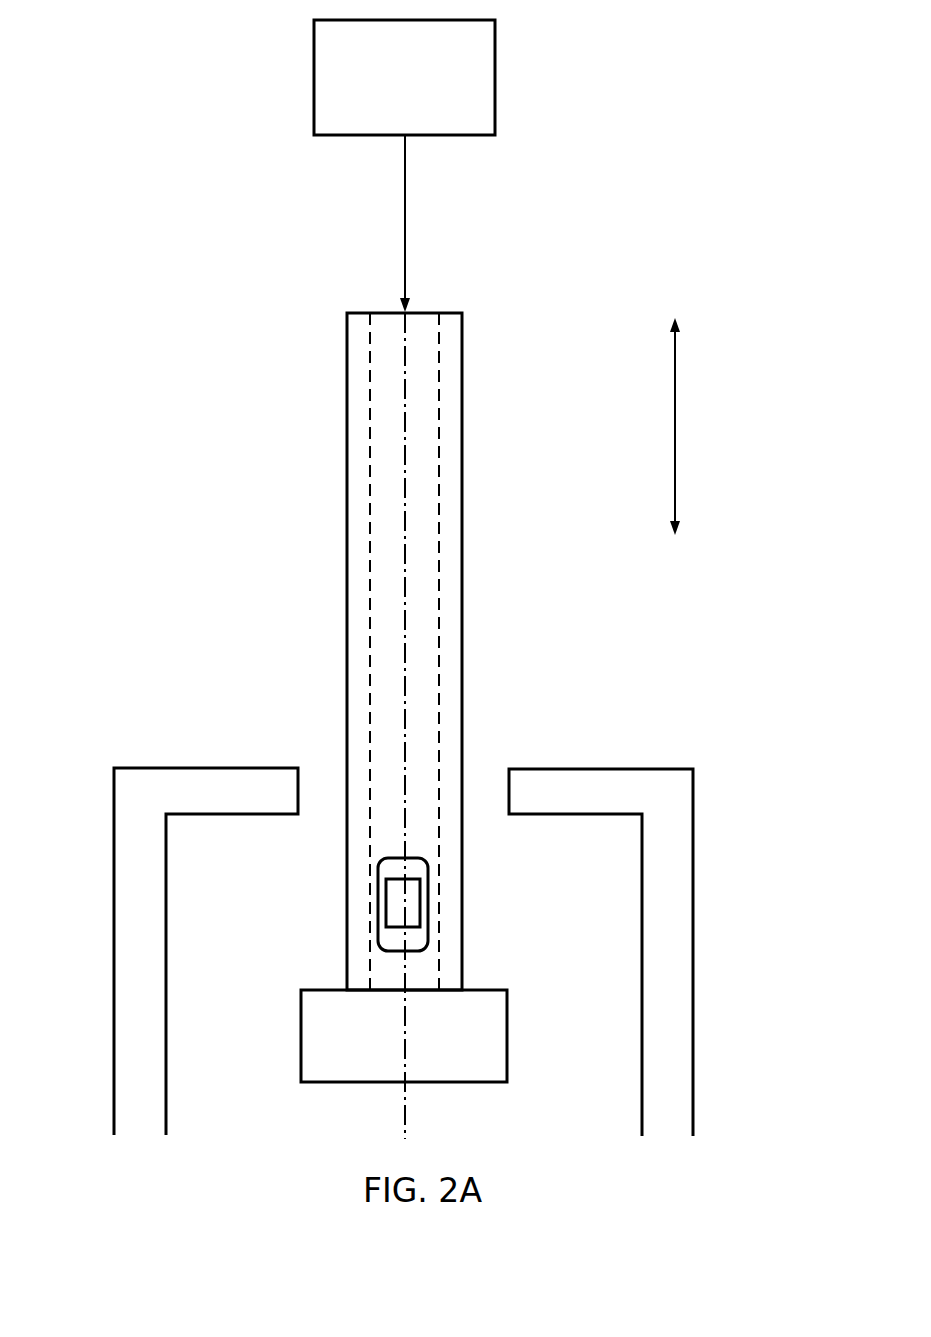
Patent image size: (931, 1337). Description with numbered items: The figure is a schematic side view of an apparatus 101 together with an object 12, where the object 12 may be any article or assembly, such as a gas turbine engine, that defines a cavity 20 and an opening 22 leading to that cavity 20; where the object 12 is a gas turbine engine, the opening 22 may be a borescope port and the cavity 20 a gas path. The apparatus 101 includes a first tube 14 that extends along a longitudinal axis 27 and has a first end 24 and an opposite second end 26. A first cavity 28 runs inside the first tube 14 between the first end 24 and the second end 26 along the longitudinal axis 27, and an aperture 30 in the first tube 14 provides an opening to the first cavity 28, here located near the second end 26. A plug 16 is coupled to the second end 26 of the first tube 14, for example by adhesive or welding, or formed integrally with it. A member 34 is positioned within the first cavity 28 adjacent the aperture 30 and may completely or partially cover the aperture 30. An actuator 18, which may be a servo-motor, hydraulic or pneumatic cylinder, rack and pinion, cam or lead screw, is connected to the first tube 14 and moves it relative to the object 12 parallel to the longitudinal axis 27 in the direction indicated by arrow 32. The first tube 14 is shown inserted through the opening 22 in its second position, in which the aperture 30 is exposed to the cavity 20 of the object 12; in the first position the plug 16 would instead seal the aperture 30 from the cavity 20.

The apparatus 101 is at (138, 230).
The actuator 18 is at (495, 62).
The first tube 14 is at (463, 340).
The first end 24 is at (298, 320).
The longitudinal axis 27 is at (406, 511).
The first cavity 28 is at (382, 597).
The arrow 32 is at (675, 426).
The object 12 is at (676, 806).
The opening 22 is at (494, 757).
The cavity 20 is at (582, 886).
The aperture 30 is at (418, 943).
The member 34 is at (393, 903).
The second end 26 is at (302, 972).
The plug 16 is at (496, 1013).